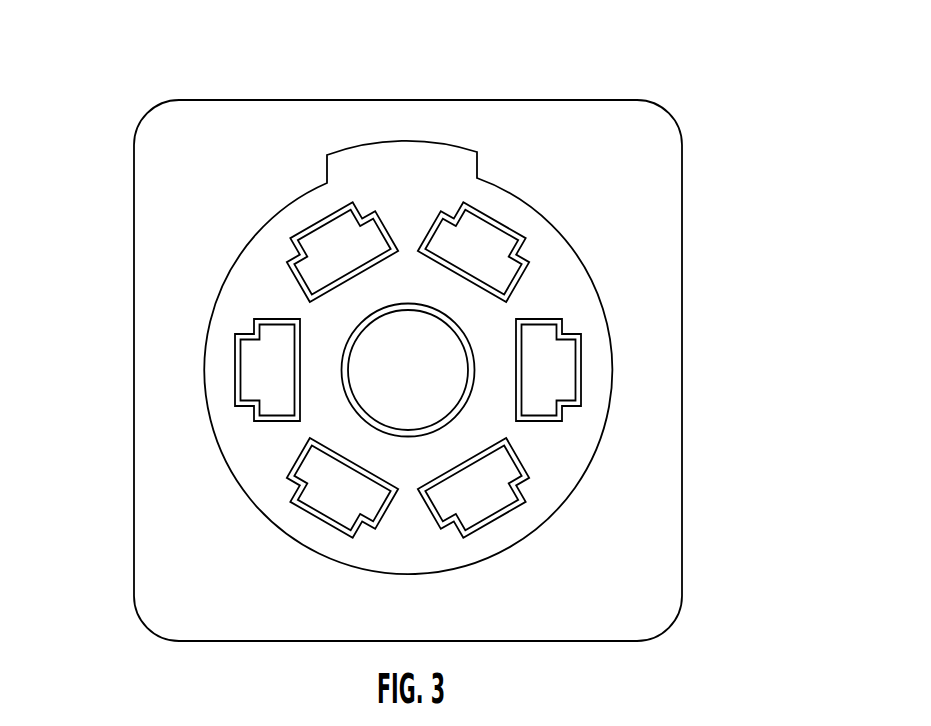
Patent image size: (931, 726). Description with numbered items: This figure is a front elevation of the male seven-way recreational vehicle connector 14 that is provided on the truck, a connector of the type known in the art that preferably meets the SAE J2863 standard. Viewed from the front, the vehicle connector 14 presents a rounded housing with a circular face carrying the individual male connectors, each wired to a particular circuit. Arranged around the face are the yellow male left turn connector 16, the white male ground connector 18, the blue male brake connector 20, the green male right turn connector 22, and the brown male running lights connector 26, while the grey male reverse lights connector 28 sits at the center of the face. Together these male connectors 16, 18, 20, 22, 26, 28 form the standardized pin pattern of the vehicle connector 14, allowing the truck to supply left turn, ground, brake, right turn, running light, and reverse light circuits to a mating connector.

The vehicle connector 14 is at (646, 63).
The male left turn connector 16 is at (563, 360).
The male ground connector 18 is at (495, 492).
The male brake connector 20 is at (323, 495).
The male right turn connector 22 is at (258, 374).
The male running lights connector 26 is at (320, 256).
The male reverse lights connector 28 is at (443, 347).